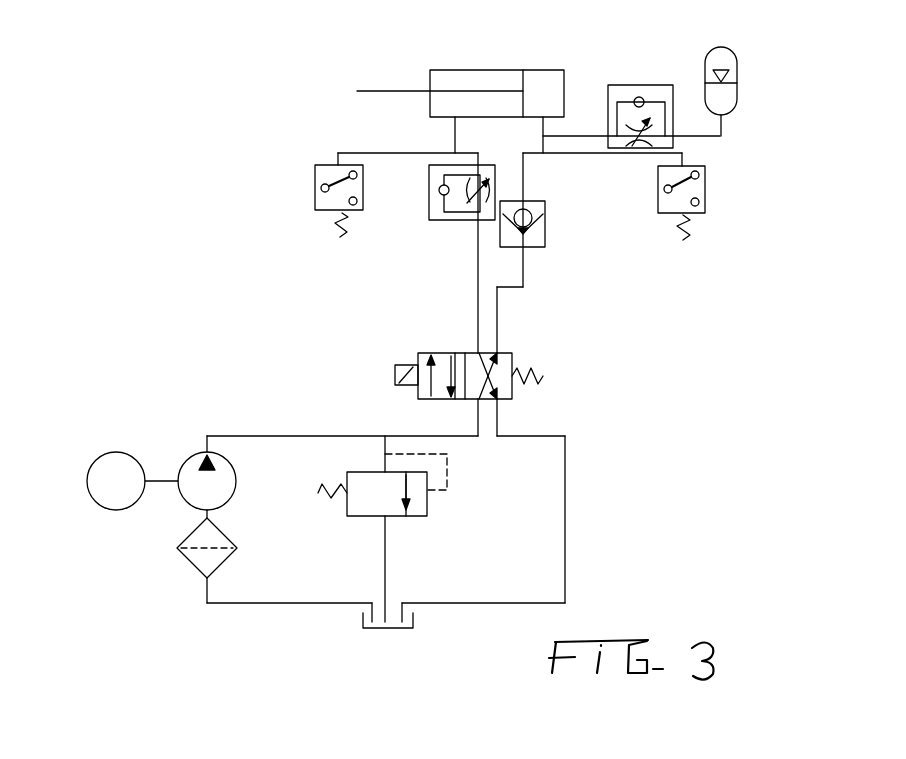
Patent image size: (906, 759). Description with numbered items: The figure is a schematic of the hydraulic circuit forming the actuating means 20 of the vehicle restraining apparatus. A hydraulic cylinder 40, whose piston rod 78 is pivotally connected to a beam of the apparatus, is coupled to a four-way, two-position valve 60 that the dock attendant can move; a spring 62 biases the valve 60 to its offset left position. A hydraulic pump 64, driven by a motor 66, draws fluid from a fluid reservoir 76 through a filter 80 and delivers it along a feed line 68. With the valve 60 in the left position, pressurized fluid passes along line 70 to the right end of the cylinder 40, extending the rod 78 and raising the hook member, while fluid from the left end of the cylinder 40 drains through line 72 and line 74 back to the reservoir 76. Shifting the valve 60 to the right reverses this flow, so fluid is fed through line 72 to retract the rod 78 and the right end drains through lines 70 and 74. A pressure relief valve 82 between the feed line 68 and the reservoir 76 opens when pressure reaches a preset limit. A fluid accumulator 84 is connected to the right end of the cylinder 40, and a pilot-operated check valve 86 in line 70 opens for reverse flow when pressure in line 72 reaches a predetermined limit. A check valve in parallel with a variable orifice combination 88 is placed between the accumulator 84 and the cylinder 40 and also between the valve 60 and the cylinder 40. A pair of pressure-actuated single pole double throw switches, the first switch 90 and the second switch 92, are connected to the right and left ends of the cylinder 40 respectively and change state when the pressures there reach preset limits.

The actuating means 20 is at (238, 157).
The hydraulic cylinder 40 is at (503, 70).
The piston rod 78 is at (400, 91).
The line 72 is at (455, 139).
The line 70 is at (545, 125).
The check valve in parallel with a variable orifice combination 88 is at (428, 203).
The fluid accumulator 84 is at (733, 97).
The pressure-actuated single pole double throw switch PS2 92 is at (315, 196).
The pressure-actuated single pole double throw switch PS1 90 is at (705, 200).
The pilot-operated check valve 86 is at (507, 247).
The four-way, two-position valve 60 is at (420, 353).
The spring 62 is at (543, 373).
The feed line 68 is at (305, 436).
The motor 66 is at (87, 475).
The hydraulic pump 64 is at (237, 482).
The filter 80 is at (187, 558).
The pressure relief valve 82 is at (397, 517).
The line 74 is at (565, 548).
The fluid reservoir 76 is at (362, 621).